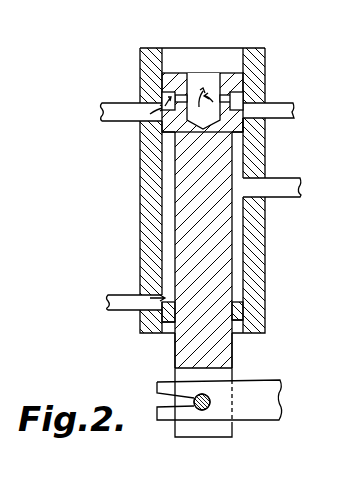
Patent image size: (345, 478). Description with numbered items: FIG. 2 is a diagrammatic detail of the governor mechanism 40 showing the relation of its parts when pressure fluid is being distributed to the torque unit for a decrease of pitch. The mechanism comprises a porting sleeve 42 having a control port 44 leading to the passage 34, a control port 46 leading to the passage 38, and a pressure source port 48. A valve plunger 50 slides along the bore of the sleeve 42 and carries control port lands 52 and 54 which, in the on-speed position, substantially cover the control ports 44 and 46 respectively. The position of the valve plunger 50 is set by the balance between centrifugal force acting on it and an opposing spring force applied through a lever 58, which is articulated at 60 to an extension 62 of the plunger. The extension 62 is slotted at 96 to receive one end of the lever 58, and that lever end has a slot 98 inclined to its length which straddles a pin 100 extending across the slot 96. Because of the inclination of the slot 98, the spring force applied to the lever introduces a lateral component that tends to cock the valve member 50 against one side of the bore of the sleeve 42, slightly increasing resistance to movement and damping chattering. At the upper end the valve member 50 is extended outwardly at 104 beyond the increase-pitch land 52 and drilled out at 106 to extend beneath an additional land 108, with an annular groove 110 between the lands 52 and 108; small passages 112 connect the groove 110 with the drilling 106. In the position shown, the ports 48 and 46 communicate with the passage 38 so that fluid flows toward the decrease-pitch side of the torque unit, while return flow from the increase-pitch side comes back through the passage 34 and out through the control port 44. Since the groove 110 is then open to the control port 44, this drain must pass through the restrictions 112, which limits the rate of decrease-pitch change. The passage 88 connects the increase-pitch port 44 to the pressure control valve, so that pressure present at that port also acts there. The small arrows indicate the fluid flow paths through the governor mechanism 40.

The passage 34 is at (113, 112).
The passage 38 is at (113, 304).
The governor mechanism 40 is at (304, 350).
The porting sleeve 42 is at (150, 62).
The control port 44 is at (147, 115).
The control port 46 is at (146, 297).
The pressure source port 48 is at (258, 190).
The valve plunger 50 is at (185, 180).
The control port land 52 is at (247, 125).
The control port land 54 is at (240, 315).
The lever 58 is at (284, 408).
The articulation 60 is at (212, 402).
The extension 62 is at (233, 360).
The passage 88 is at (295, 112).
The slot 96 is at (184, 428).
The slot 98 is at (160, 391).
The pin 100 is at (205, 410).
The outward extension of valve member 104 is at (179, 96).
The drilling 106 is at (201, 80).
The additional land 108 is at (234, 92).
The annular groove 110 is at (240, 100).
The small passages 112 is at (170, 92).